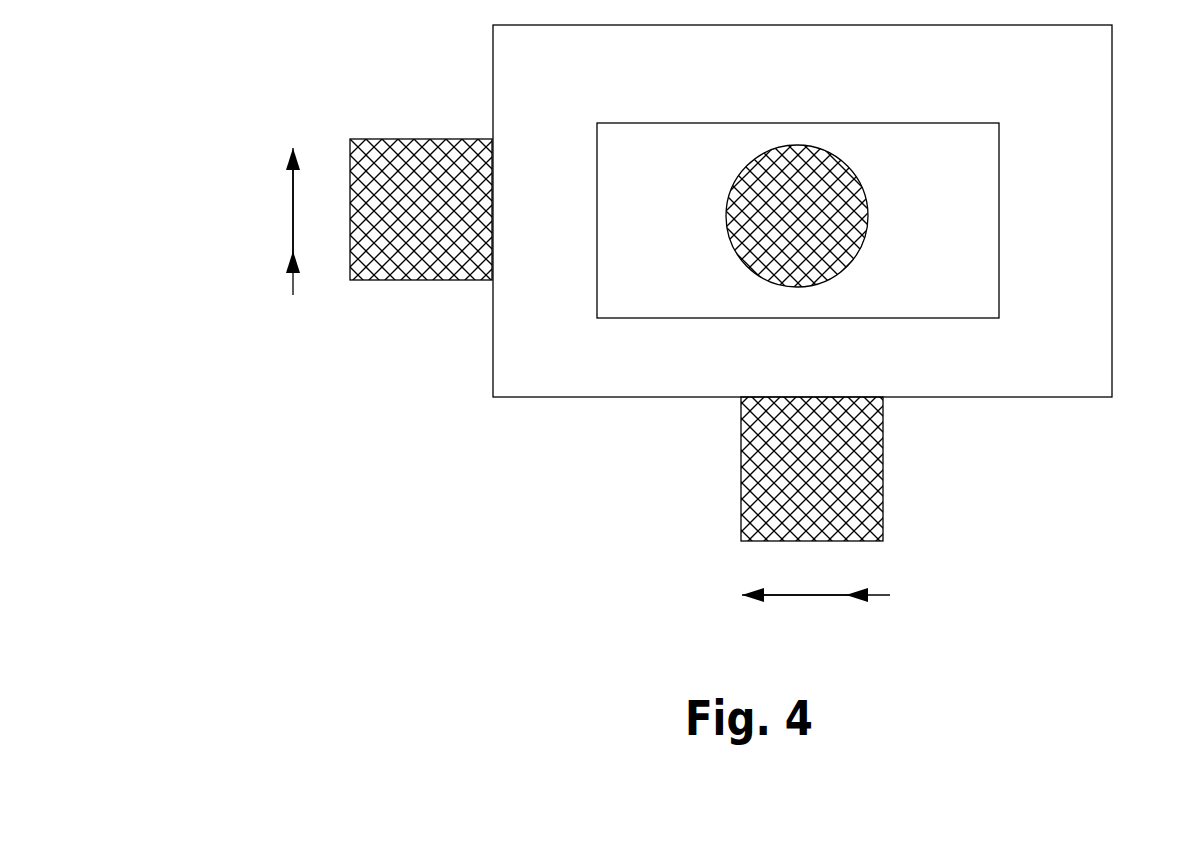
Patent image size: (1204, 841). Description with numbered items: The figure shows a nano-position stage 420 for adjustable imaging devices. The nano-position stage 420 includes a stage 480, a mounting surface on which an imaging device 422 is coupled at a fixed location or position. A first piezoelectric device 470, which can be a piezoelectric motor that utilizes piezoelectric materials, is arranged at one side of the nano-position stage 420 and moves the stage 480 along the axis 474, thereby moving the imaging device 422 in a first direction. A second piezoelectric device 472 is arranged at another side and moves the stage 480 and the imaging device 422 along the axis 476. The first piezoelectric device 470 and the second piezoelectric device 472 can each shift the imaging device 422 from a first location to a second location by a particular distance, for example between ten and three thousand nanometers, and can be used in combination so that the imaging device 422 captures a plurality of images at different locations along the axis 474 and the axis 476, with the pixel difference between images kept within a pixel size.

The nano-position stage 420 is at (1112, 34).
The stage 480 is at (999, 172).
The imaging device 422 is at (866, 232).
The first piezoelectric device 470 is at (421, 281).
The second piezoelectric device 472 is at (883, 466).
The axis 474 is at (293, 220).
The axis 476 is at (817, 597).